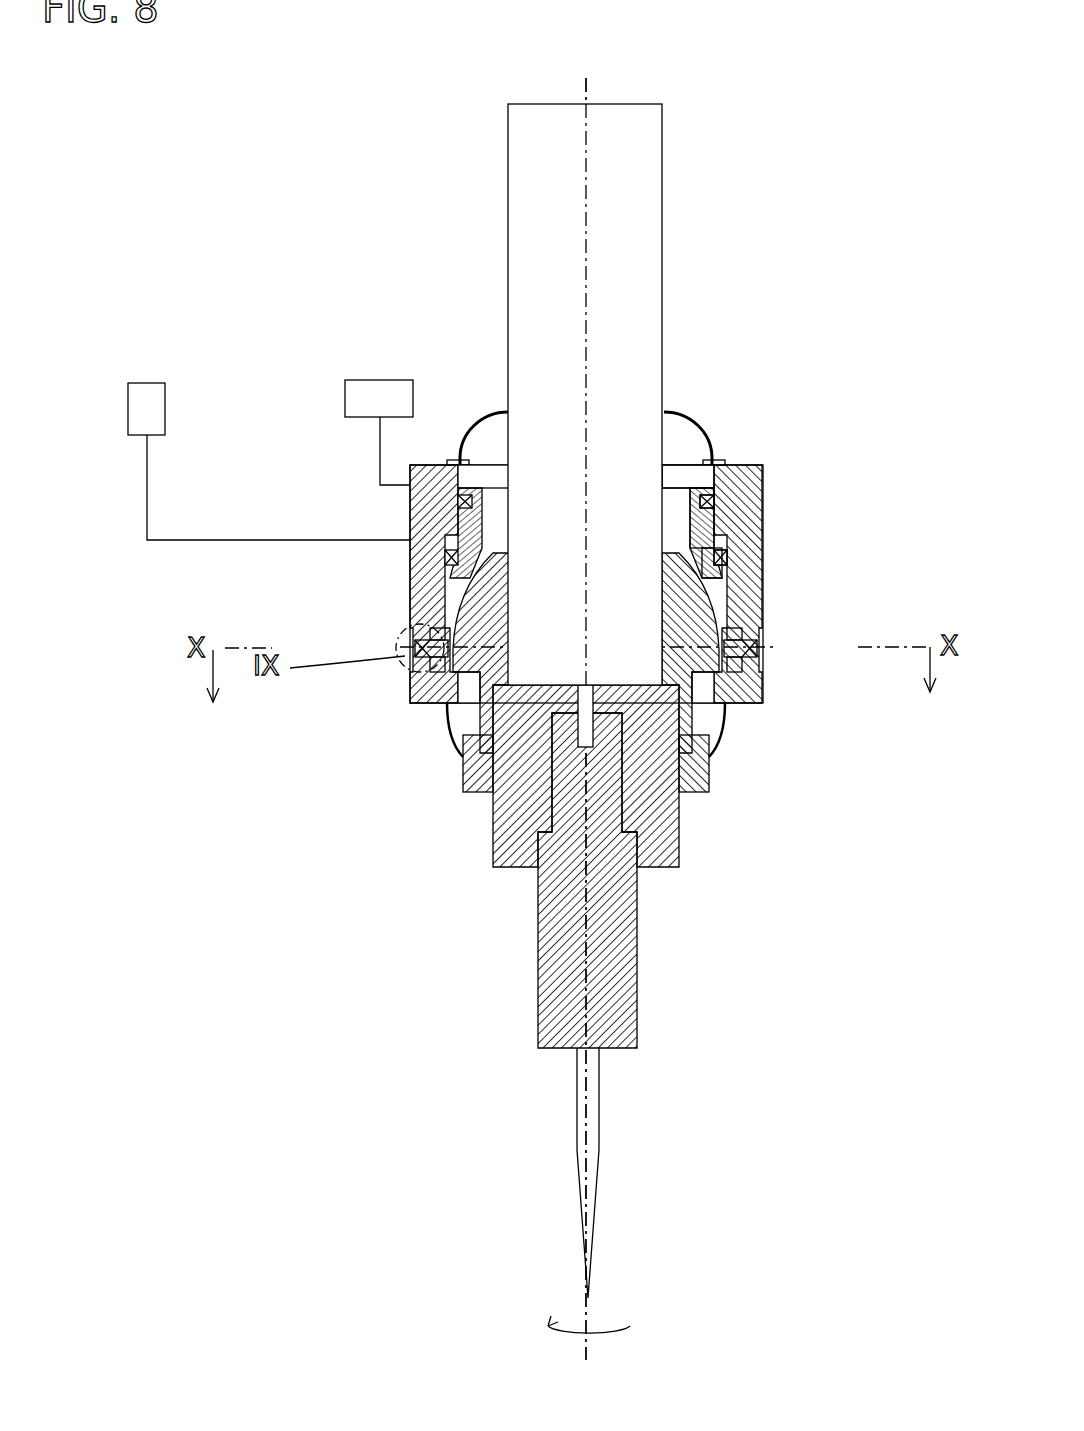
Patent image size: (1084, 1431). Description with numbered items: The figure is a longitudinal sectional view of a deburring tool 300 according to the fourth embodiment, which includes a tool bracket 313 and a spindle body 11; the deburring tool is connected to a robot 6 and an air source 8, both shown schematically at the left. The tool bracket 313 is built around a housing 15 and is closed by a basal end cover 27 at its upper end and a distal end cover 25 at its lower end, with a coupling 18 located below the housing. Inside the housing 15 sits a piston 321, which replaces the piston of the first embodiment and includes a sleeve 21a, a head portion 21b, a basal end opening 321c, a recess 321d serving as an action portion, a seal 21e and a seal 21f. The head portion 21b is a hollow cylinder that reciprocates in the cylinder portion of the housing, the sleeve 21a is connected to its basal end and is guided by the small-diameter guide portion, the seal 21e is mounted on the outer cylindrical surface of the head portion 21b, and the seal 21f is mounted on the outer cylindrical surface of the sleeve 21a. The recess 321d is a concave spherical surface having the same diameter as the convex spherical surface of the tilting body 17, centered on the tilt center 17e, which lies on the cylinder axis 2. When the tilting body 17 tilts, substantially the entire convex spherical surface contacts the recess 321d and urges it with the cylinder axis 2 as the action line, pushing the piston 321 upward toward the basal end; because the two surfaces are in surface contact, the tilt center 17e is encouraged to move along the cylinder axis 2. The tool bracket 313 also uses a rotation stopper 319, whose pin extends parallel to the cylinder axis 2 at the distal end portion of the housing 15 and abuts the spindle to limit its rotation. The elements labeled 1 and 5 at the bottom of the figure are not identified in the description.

The deburring tool 300 is at (892, 54).
The cylinder axis 2 is at (583, 79).
The spindle body 11 is at (687, 220).
The air source 8 is at (147, 383).
The robot 6 is at (362, 380).
The basal end cover 27 is at (493, 412).
The tool bracket 313 is at (737, 412).
The piston 321 is at (906, 414).
The basal end opening 321c is at (690, 487).
The recess (action portion) 321d is at (727, 597).
The sleeve 21a is at (715, 482).
The seal 21f is at (730, 495).
The seal 21e is at (727, 553).
The head portion 21b is at (727, 573).
The housing 15 is at (410, 512).
The rotation stopper 319 is at (405, 640).
The tilting body 17 is at (765, 618).
The tilt center 17e is at (584, 647).
The distal end cover 25 is at (447, 718).
The coupling 18 is at (710, 770).
The needle 1 is at (597, 1190).
The rotation direction 5 is at (630, 1326).